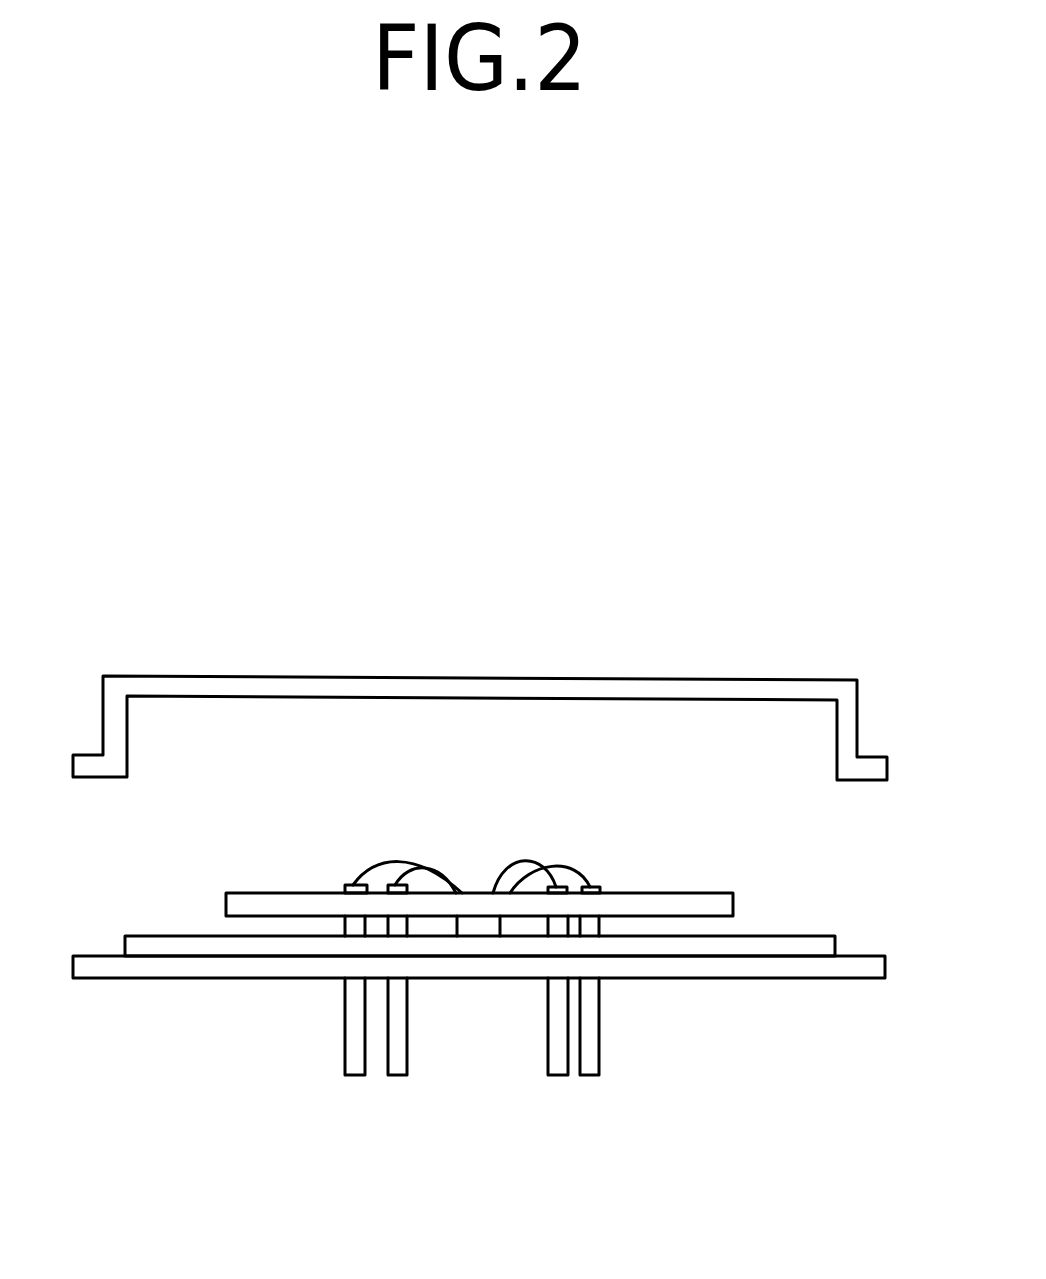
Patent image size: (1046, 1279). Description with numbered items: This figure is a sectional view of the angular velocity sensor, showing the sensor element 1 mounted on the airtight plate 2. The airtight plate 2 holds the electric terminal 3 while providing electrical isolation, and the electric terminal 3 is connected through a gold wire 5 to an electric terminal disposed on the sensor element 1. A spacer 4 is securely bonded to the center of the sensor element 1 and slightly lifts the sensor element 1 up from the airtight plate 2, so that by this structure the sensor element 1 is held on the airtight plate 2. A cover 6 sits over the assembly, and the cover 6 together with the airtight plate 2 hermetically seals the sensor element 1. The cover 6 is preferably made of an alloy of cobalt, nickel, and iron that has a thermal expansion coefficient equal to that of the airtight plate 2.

The sensor element 1 is at (735, 906).
The airtight plate 2 is at (772, 950).
The electric terminal 3 is at (622, 1088).
The spacer 4 is at (480, 928).
The gold wire 5 is at (562, 870).
The cover 6 is at (485, 678).